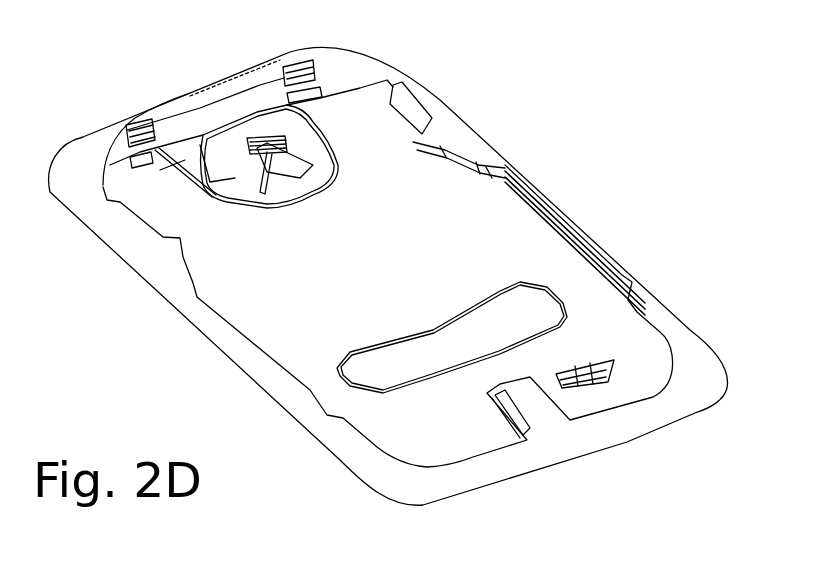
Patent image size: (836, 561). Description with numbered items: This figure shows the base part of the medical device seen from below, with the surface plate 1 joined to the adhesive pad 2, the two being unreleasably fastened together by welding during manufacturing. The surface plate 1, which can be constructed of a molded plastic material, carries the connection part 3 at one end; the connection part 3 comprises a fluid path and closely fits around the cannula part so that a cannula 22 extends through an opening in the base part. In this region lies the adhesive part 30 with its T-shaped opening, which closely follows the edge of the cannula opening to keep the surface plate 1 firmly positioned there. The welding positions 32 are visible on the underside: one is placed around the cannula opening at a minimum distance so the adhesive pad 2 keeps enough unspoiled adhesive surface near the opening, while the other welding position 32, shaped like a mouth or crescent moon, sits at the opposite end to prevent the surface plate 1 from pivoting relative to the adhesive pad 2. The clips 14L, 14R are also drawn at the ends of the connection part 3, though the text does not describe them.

The surface plate 1 is at (650, 327).
The adhesive pad 2 is at (717, 400).
The connection part 3 is at (185, 92).
The left clip 14L is at (127, 127).
The right clip 14R is at (317, 70).
The cannula 22 is at (265, 185).
The adhesive part 30 is at (230, 143).
The welding positions 32 is at (330, 185).